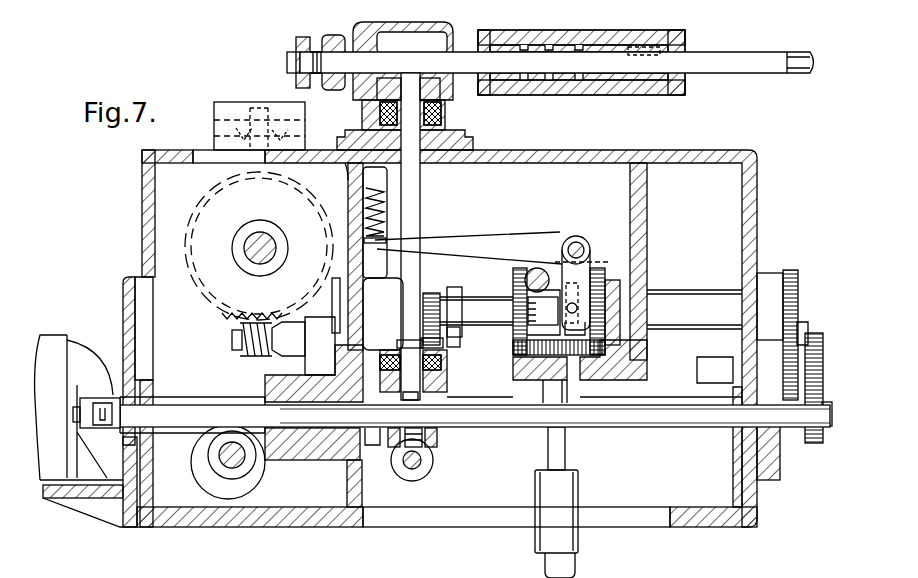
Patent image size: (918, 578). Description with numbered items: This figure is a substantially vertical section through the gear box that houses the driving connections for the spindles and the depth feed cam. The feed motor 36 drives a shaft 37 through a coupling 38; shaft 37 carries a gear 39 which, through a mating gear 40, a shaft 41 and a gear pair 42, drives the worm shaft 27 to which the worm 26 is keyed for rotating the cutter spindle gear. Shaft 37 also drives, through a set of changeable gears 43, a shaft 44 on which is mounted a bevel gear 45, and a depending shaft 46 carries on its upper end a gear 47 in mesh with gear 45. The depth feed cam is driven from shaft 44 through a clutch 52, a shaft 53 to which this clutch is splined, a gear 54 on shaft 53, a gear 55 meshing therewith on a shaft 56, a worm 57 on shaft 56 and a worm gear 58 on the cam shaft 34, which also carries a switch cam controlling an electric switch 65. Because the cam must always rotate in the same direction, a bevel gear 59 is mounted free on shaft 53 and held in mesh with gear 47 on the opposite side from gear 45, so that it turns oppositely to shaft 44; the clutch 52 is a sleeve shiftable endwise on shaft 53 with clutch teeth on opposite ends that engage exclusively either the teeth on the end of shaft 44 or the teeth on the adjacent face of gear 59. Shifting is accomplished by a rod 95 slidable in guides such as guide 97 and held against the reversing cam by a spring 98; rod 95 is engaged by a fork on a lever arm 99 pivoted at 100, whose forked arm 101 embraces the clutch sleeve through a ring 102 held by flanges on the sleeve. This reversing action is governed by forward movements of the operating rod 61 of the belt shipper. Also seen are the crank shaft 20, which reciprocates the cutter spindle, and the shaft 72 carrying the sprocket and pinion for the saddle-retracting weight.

The crank shaft 20 is at (230, 463).
The worm 26 is at (587, 87).
The worm shaft 27 is at (733, 72).
The cam shaft 34 is at (252, 260).
The feed motor 36 is at (47, 337).
The shaft 37 is at (663, 427).
The coupling 38 is at (97, 397).
The gear 39 is at (380, 447).
The mating gear 40 is at (440, 387).
The shaft 41 is at (421, 184).
The gear pair 42 is at (398, 40).
The changeable gears 43 is at (800, 327).
The shaft 44 is at (700, 292).
The bevel gear 45 is at (603, 265).
The depending shaft 46 is at (567, 457).
The gear 47 is at (597, 353).
The clutch 52 is at (527, 335).
The shaft 53 is at (467, 283).
The gear 54 is at (431, 293).
The gear 55 is at (423, 335).
The shaft 56 is at (238, 340).
The worm 57 is at (262, 356).
The worm gear 58 is at (222, 313).
The bevel gear 59 is at (513, 280).
The operating rod 61 is at (433, 462).
The electric switch 65 is at (245, 96).
The shaft 72 is at (535, 268).
The rod 95 is at (373, 262).
The guide 97 is at (362, 182).
The spring 98 is at (380, 215).
The lever arm 99 is at (470, 240).
The pivot 100 is at (575, 248).
The forked arm 101 is at (583, 267).
The ring 102 is at (565, 330).